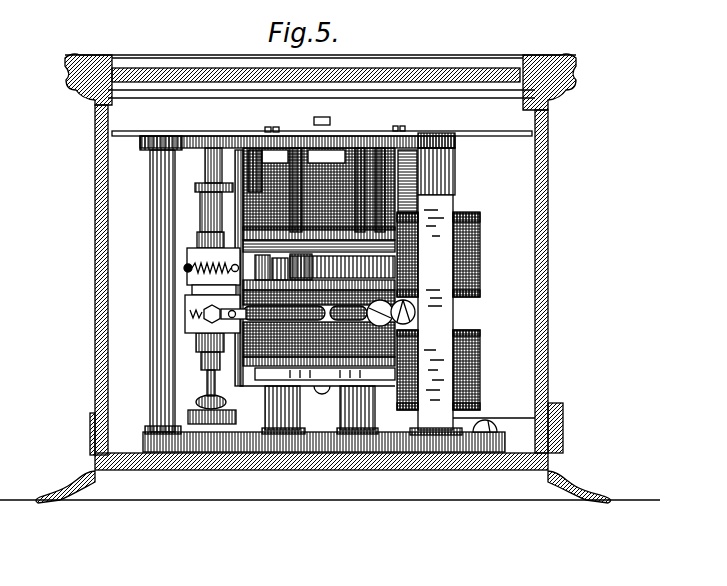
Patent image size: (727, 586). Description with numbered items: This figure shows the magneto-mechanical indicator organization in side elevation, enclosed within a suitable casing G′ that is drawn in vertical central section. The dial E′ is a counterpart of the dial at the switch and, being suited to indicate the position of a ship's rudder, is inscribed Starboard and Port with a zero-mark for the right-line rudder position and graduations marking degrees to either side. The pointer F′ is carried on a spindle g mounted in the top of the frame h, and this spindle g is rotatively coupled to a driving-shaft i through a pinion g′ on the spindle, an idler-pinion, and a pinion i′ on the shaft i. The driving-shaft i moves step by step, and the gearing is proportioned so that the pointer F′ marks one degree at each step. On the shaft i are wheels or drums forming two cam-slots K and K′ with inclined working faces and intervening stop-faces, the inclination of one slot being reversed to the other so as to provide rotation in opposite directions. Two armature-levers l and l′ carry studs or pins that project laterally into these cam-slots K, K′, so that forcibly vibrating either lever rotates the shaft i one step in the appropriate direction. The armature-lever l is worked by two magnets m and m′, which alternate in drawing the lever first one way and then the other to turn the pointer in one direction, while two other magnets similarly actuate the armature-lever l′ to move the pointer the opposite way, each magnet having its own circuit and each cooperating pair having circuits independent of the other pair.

The indicator organization casing G′ is at (323, 278).
The pointer F′ is at (333, 123).
The dial E′ is at (486, 129).
The frame h is at (154, 285).
The driving-shaft i is at (210, 165).
The pinion i′ is at (195, 190).
The spindle g is at (335, 147).
The pinion g′ is at (345, 205).
The magnet m′ is at (479, 254).
The magnet m is at (478, 370).
The cam-slot K′ is at (185, 268).
The cam-slot K is at (195, 315).
The armature-lever l′ is at (190, 266).
The armature-lever l is at (205, 327).